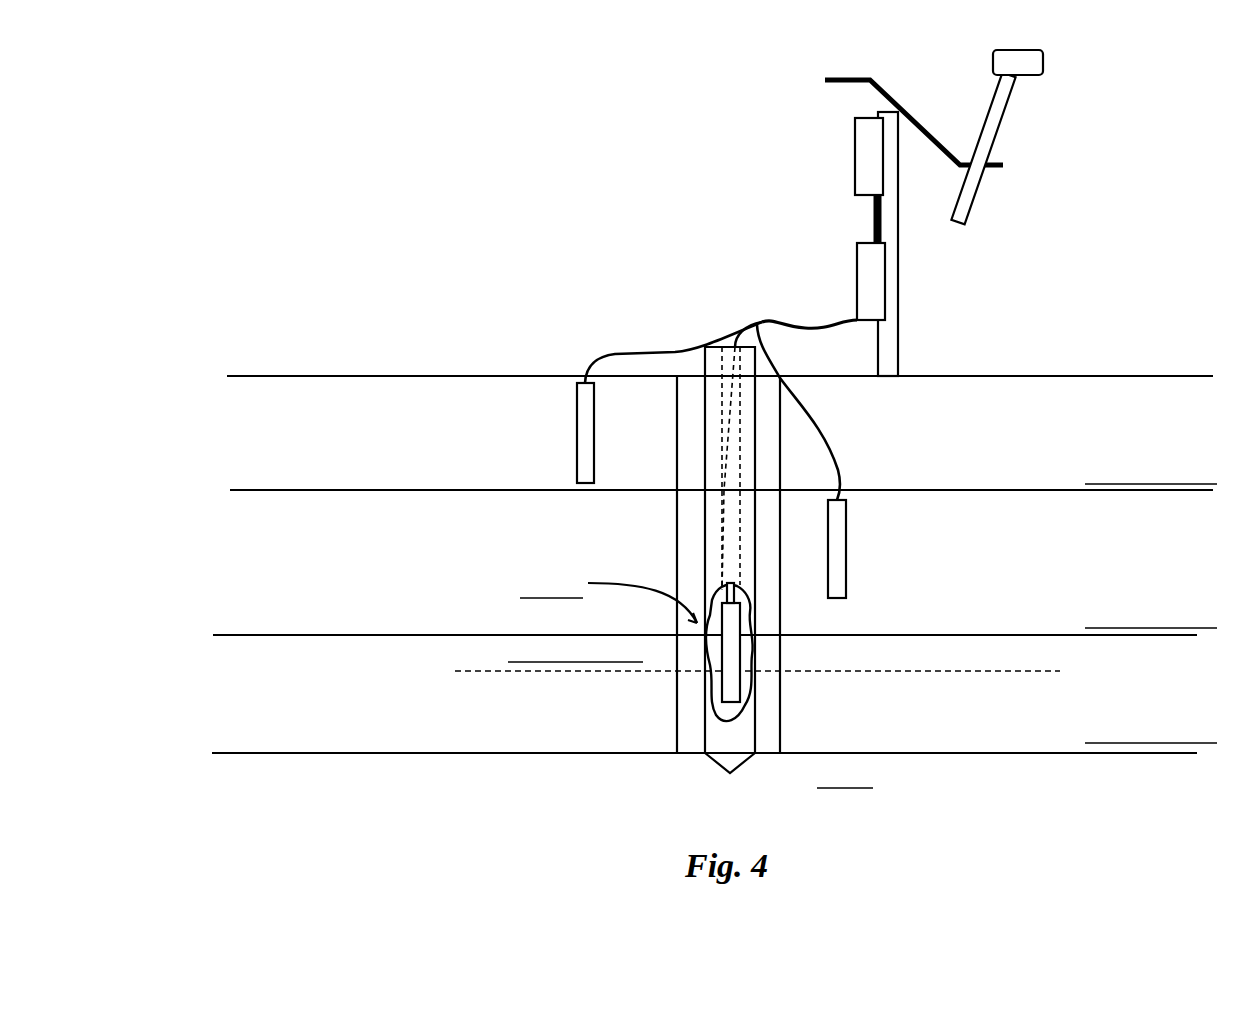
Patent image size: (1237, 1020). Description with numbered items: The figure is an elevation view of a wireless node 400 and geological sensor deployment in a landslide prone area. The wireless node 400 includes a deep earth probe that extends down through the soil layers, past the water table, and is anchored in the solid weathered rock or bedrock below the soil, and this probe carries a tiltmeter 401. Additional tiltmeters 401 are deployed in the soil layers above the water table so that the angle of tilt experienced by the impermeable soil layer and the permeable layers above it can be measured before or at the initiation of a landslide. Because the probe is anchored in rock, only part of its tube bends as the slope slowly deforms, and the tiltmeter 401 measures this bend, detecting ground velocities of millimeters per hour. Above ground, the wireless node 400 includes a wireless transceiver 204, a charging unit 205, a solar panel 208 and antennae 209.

The wireless node 400 is at (305, 235).
The wireless transceiver 204 is at (857, 290).
The charging unit 205 is at (855, 170).
The solar panel 208 is at (845, 78).
The antennae 209 is at (997, 147).
The tiltmeter 401 is at (741, 660).